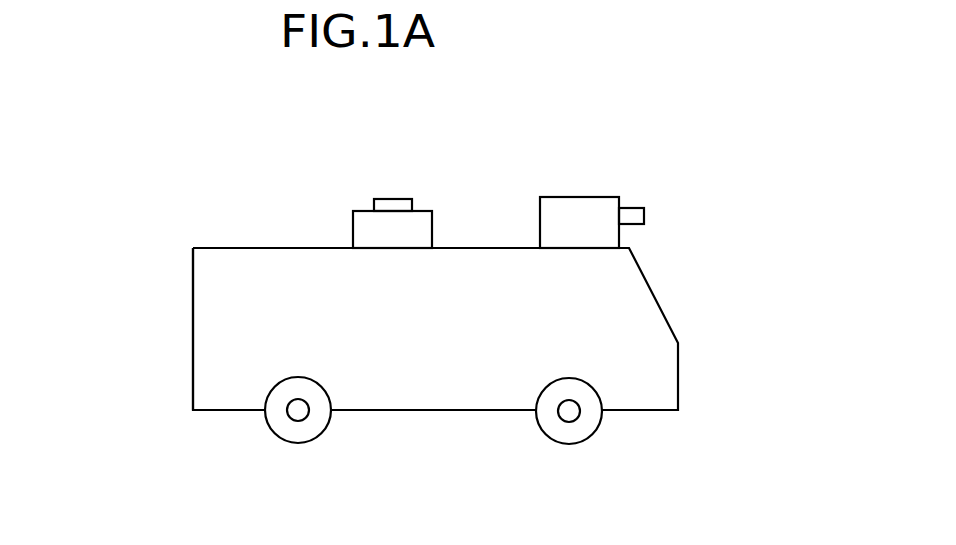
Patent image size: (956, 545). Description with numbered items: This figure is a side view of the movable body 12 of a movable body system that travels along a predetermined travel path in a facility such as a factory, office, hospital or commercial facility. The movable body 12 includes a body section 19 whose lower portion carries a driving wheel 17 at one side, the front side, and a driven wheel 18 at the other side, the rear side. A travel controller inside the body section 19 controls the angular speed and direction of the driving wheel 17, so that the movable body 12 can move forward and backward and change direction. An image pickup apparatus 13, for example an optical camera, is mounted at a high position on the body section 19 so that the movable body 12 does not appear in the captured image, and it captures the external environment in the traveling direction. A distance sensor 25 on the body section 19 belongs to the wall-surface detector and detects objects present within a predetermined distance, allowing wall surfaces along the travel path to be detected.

The movable body 12 is at (703, 190).
The image pickup apparatus 13 is at (616, 195).
The driving wheel 17 is at (587, 427).
The driven wheel 18 is at (316, 425).
The body section 19 is at (212, 303).
The distance sensor 25 is at (378, 207).